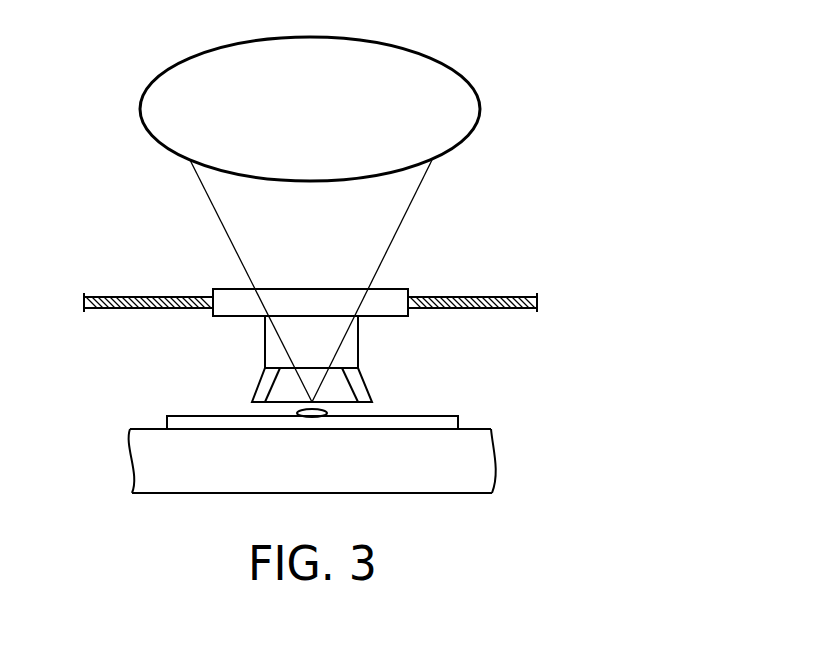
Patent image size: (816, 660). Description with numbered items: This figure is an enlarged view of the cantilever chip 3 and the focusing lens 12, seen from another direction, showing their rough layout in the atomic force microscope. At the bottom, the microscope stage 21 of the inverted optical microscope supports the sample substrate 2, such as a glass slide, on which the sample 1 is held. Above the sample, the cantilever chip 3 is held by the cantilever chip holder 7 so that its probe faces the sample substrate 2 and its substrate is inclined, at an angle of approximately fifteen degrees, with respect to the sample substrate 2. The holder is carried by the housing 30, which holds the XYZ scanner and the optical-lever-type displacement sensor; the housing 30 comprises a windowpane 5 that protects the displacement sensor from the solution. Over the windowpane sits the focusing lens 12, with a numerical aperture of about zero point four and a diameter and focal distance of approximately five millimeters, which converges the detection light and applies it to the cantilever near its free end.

The sample 1 is at (296, 413).
The sample substrate 2 is at (167, 422).
The cantilever chip 3 is at (365, 380).
The windowpane 5 is at (232, 317).
The cantilever chip holder 7 is at (350, 342).
The focusing lens 12 is at (447, 80).
The microscope stage 21 is at (477, 428).
The housing 30 is at (488, 296).